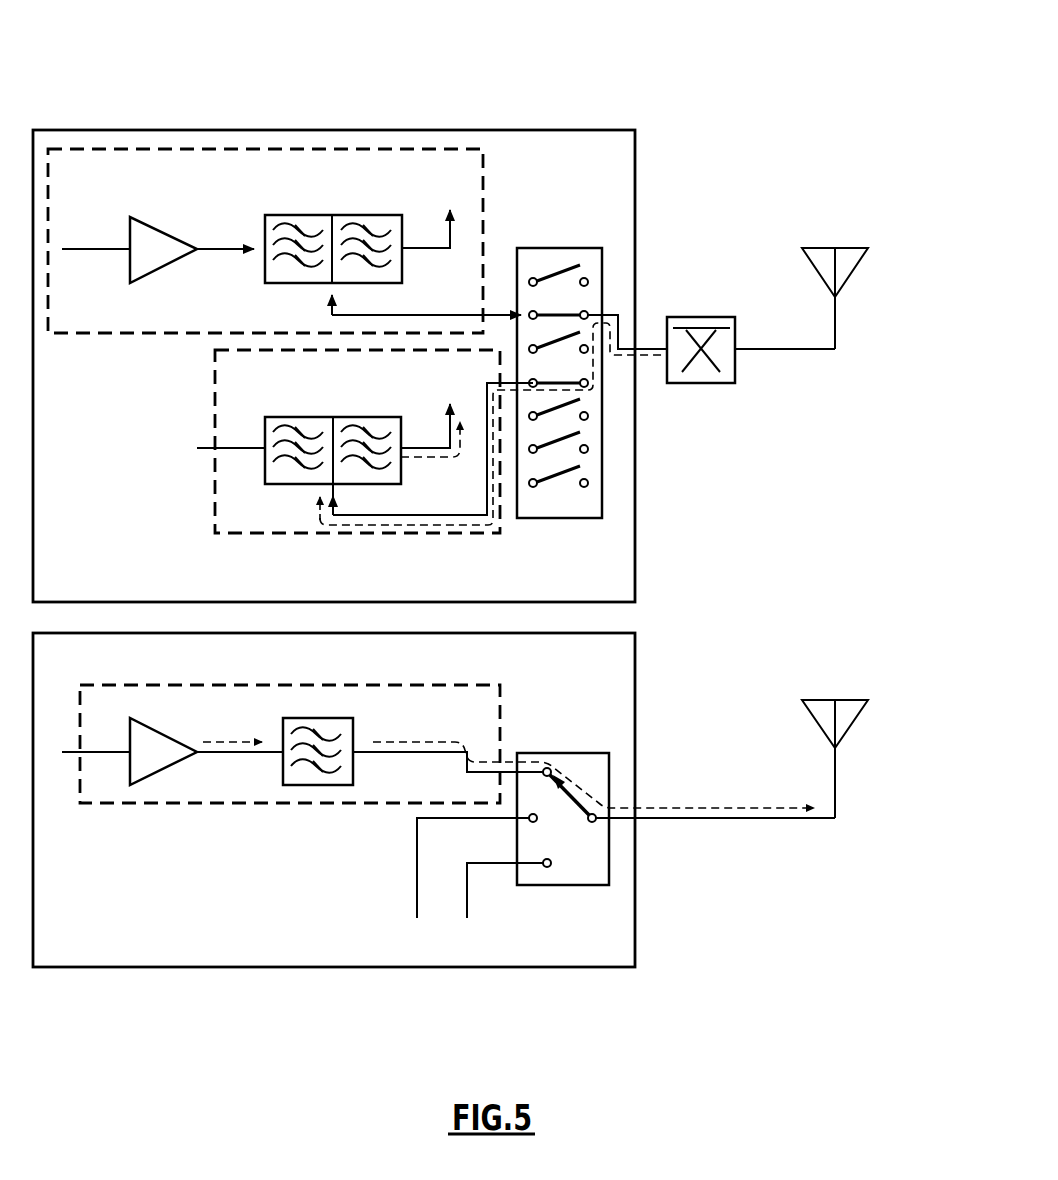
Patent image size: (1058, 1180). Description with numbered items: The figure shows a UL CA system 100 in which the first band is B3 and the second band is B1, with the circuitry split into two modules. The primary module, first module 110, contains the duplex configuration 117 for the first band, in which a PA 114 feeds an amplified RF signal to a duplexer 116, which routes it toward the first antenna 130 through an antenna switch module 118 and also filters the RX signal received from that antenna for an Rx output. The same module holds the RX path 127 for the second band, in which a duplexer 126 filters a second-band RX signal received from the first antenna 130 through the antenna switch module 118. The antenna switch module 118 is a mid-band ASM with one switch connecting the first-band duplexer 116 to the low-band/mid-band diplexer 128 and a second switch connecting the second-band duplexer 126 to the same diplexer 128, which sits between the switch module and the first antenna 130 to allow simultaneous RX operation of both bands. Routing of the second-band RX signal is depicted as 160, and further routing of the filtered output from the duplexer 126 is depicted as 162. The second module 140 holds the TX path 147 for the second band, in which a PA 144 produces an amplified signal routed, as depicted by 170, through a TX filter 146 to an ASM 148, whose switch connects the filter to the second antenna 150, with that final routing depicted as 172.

The UL CA system 100 is at (504, 76).
The first module 110 is at (635, 532).
The PA 114 is at (147, 222).
The duplexer 116 is at (263, 236).
The duplex configuration 117 is at (168, 333).
The antenna switch module 118 is at (568, 518).
The duplexer 126 is at (280, 484).
The RX path 127 is at (442, 533).
The diplexer 128 is at (700, 383).
The first antenna 130 is at (861, 288).
The second module 140 is at (635, 700).
The PA 144 is at (180, 700).
The B1 TX filter 146 is at (313, 785).
The TX path 147 is at (373, 803).
The ASM 148 is at (585, 885).
The second antenna 150 is at (861, 740).
The RX signal routing 160 is at (322, 503).
The filtered output routing 162 is at (422, 457).
The amplified TX signal routing 170 is at (253, 739).
The TX signal routing 172 is at (658, 808).